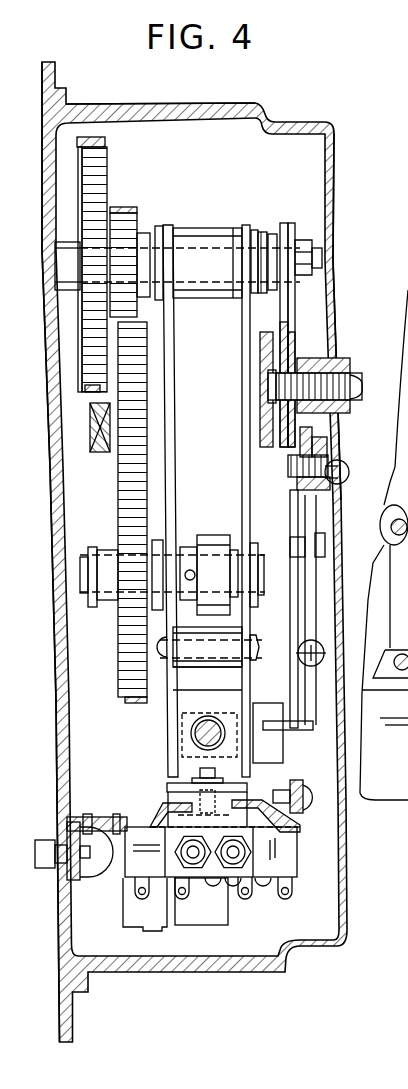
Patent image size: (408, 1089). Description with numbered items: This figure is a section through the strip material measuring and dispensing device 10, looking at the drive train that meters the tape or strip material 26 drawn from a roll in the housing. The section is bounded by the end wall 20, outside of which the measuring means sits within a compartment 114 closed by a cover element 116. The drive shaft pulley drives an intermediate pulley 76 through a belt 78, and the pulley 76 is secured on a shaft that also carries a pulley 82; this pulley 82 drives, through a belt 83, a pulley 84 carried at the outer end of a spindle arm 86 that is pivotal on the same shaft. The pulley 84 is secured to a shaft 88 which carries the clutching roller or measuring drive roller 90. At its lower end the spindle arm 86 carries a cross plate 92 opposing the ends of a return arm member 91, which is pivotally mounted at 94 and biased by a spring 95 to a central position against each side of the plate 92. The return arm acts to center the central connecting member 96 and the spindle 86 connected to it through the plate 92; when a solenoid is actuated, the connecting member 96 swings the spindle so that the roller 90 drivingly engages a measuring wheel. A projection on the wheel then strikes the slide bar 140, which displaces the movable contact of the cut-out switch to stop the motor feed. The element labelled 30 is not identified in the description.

The strip material measuring and dispensing device 10 is at (293, 108).
The compartment 114 is at (218, 133).
The cover element 116 is at (333, 166).
The end wall 20 is at (51, 433).
The output shaft 30 is at (60, 266).
The belt 78 is at (103, 140).
The intermediate pulley 76 is at (108, 164).
The belt 83 is at (125, 208).
The pulley 82 is at (137, 218).
The pulley 84 is at (127, 649).
The slide bar 140 is at (82, 442).
The spindle arm 86 is at (237, 401).
The pivot mounting 94 is at (298, 473).
The clutching roller 90 is at (213, 535).
The shaft 88 is at (263, 573).
The cross plate 92 is at (190, 702).
The central connecting member 96 is at (196, 741).
The return arm member 91 is at (314, 738).
The spring 95 is at (298, 653).
The tape or strip material 26 is at (407, 432).